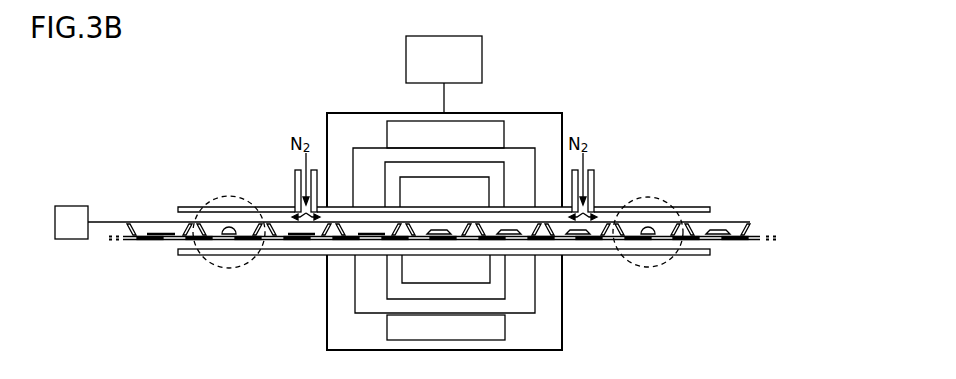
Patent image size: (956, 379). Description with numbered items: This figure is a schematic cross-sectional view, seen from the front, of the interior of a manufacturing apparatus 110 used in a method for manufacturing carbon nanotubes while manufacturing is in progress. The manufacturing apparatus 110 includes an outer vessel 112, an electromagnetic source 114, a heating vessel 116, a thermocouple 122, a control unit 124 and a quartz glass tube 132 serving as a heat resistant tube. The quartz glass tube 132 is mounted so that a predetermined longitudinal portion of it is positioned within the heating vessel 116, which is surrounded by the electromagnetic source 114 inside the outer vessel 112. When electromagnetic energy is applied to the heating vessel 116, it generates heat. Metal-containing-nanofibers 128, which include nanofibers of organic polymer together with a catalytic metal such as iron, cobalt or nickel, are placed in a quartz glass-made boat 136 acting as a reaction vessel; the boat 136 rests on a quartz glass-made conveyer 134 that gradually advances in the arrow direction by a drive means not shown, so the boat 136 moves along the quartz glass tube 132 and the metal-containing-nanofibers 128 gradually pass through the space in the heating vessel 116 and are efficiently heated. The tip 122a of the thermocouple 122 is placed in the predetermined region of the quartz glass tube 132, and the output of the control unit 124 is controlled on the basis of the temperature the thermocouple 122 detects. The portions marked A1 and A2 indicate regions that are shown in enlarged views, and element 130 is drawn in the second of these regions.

The manufacturing apparatus 110 is at (577, 53).
The outer vessel 112 is at (553, 111).
The electromagnetic source 114 is at (505, 131).
The heating vessel 116 is at (386, 290).
The thermocouple 122 is at (70, 240).
The tip of the thermocouple 122a is at (432, 208).
The control unit 124 is at (482, 57).
The metal-containing-nanofibers 128 is at (228, 236).
The workpiece in region A2 130 is at (645, 236).
The quartz glass tube 132 is at (690, 206).
The quartz glass-made conveyer 134 is at (727, 256).
The quartz glass-made boat 136 is at (752, 233).
The portion A1 is at (231, 193).
The portion A2 is at (648, 194).